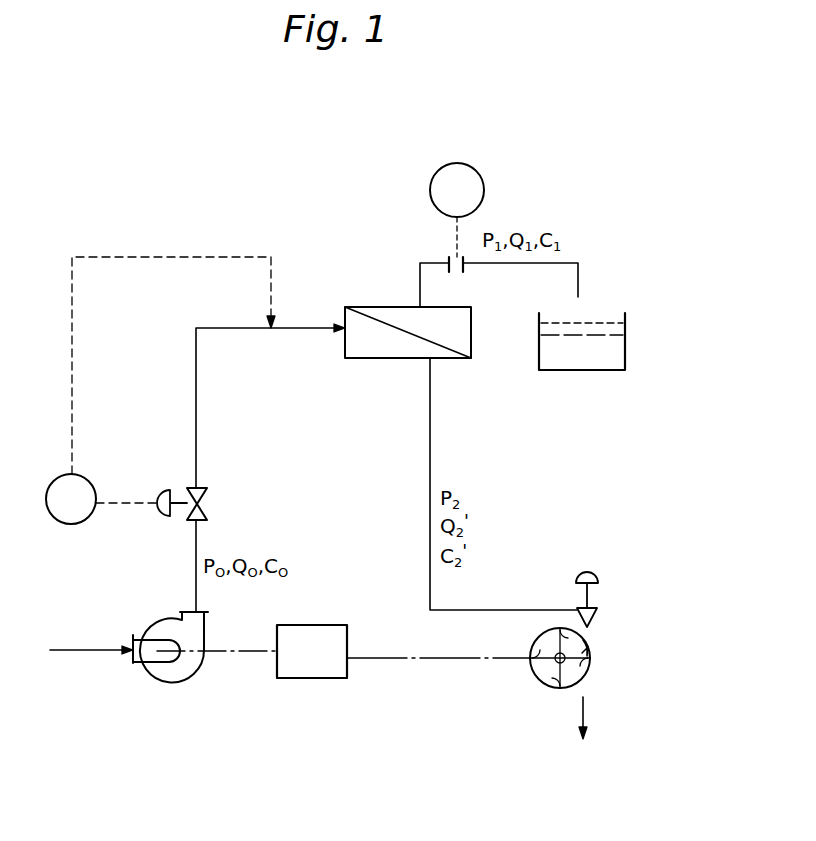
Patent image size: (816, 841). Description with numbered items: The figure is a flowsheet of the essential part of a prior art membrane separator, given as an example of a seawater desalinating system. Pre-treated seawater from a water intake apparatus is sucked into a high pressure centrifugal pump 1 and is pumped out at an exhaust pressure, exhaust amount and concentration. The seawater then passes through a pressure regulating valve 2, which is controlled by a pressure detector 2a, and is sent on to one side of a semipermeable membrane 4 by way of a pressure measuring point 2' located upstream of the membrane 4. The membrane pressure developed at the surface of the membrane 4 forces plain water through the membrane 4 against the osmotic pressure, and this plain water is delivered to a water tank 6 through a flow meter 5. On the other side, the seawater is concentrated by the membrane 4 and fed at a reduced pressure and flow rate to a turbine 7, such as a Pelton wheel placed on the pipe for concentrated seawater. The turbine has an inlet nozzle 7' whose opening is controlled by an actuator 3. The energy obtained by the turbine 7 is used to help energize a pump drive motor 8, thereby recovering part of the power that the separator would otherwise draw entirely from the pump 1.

The high pressure centrifugal pump 1 is at (180, 684).
The pressure regulating valve 2 is at (179, 524).
The pressure detector 2a is at (72, 524).
The pressure measuring point 2' is at (177, 365).
The actuator 3 is at (590, 574).
The semipermeable membrane 4 is at (460, 360).
The flow meter 5 is at (432, 210).
The water tank 6 is at (582, 372).
The turbine 7 is at (545, 670).
The inlet nozzle 7' is at (604, 618).
The pump drive motor 8 is at (347, 670).